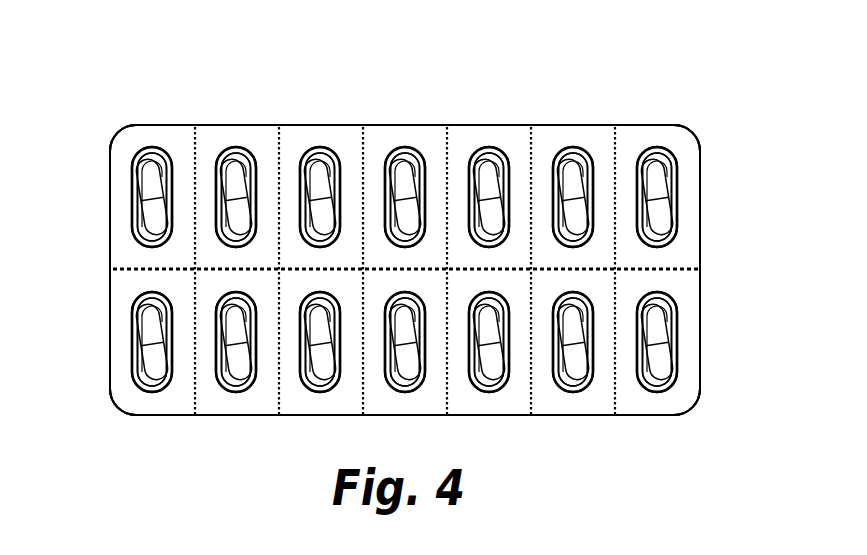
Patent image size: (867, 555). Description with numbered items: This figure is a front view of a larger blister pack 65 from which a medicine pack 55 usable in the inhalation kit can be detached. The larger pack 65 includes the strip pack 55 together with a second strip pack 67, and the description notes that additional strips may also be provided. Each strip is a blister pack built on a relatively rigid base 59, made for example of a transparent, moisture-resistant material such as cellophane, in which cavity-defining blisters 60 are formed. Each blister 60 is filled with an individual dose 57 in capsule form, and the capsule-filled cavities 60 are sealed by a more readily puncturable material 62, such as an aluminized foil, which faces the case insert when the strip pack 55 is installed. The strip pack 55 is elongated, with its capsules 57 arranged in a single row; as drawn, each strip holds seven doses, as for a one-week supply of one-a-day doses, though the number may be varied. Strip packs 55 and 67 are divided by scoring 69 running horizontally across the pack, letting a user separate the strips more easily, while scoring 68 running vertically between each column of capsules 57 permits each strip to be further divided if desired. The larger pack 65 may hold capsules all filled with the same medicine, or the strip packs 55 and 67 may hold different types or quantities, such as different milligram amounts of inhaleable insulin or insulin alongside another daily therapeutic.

The medicine pack 55 is at (697, 131).
The dose 57 is at (237, 175).
The base 59 is at (421, 136).
The cavity-defining blister 60 is at (168, 156).
The puncturable material 62 is at (140, 153).
The larger blister pack 65 is at (659, 71).
The second strip pack 67 is at (706, 338).
The vertical scoring 68 is at (279, 170).
The horizontal scoring 69 is at (143, 272).